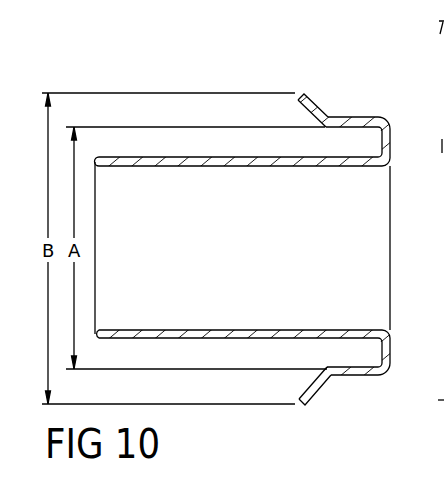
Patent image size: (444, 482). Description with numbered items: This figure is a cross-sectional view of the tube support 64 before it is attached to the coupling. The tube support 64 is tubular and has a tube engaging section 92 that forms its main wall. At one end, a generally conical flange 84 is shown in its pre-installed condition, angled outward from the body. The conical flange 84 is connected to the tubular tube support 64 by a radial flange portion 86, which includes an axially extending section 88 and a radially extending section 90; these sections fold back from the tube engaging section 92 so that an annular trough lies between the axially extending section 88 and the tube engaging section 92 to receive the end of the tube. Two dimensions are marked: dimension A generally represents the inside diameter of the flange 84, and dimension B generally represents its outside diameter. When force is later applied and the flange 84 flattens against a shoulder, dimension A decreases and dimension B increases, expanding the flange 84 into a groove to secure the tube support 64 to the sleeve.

The tube support 64 is at (324, 216).
The conical flange 84 is at (311, 105).
The radial flange portion 86 is at (360, 88).
The axially extending section 88 is at (322, 390).
The radially extending section 90 is at (388, 350).
The tube engaging section 92 is at (157, 331).